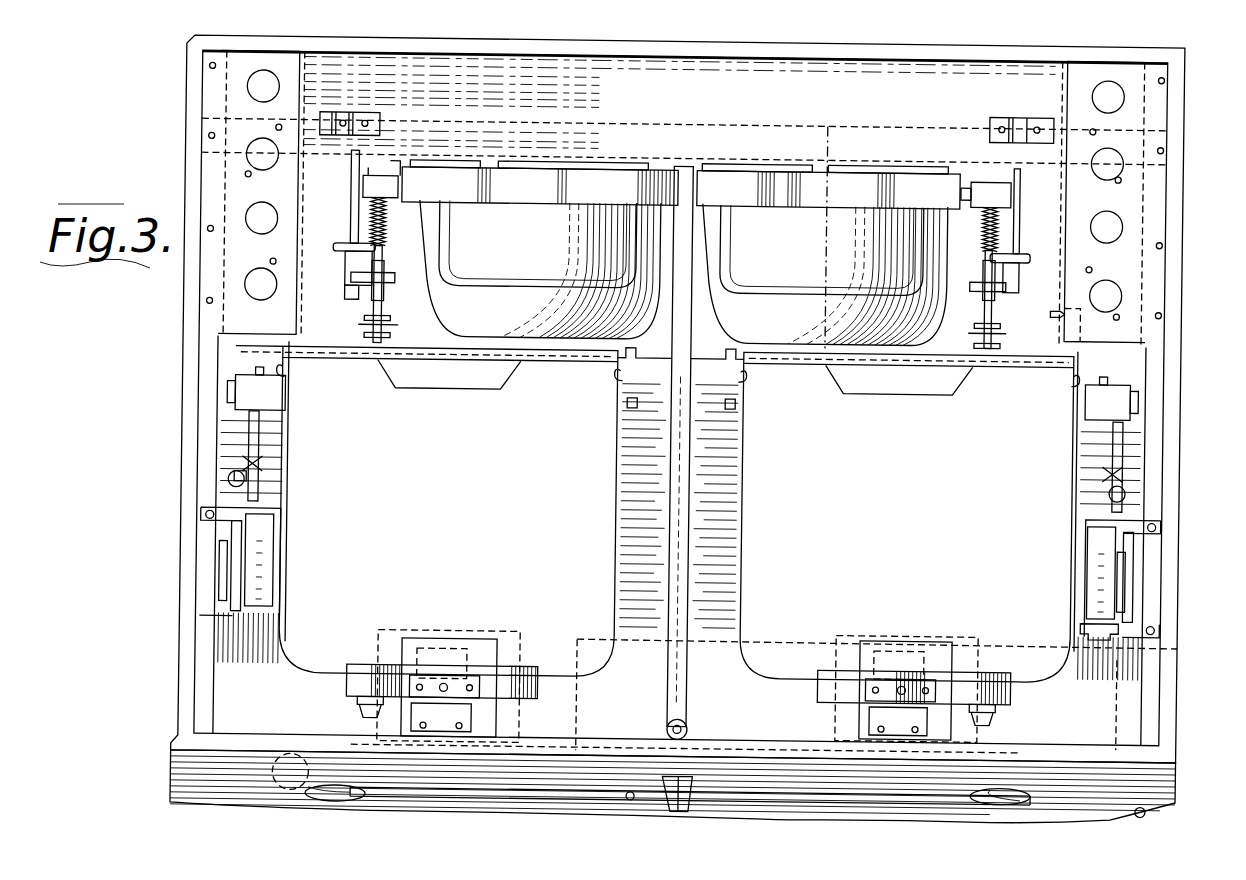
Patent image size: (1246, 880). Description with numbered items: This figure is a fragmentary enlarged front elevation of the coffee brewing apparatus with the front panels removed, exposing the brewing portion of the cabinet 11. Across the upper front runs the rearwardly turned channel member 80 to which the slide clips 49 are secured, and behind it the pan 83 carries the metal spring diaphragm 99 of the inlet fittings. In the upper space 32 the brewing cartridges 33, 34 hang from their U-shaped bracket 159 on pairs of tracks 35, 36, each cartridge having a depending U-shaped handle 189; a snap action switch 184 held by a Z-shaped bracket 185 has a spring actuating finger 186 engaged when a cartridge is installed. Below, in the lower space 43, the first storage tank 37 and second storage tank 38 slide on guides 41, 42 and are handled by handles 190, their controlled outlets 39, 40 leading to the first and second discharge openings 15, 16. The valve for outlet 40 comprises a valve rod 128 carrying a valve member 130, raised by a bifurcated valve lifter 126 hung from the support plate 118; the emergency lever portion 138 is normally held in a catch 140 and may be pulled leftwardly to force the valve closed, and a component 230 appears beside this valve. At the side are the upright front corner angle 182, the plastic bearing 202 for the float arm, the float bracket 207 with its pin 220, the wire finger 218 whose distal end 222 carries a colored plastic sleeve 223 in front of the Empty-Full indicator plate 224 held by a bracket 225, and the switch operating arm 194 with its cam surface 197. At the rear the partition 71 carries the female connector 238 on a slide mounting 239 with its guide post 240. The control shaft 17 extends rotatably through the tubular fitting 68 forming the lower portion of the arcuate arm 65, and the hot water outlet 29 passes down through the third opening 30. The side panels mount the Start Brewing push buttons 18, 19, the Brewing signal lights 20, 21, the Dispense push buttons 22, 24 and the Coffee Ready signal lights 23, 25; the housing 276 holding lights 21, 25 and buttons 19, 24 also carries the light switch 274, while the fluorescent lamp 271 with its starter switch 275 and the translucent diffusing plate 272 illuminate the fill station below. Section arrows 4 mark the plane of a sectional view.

The section line 4 is at (157, 100).
The cabinet 11 is at (845, 132).
The first discharge opening 15 is at (340, 783).
The second discharge opening 16 is at (1035, 778).
The control shaft 17 is at (697, 721).
The first "Start Brewing" push button 18 is at (282, 154).
The second "Start Brewing" push button 19 is at (1112, 140).
The "Brewing" signal light 20 is at (279, 84).
The second "Brewing" signal light 21 is at (1093, 85).
The "Dispense" push button 22 is at (283, 285).
The "Coffee Ready" signal light 23 is at (282, 219).
The second "Dispense" push button 24 is at (1110, 283).
The second "Coffee Ready" signal light 25 is at (1112, 213).
The outlet 29 is at (700, 800).
The third opening 30 is at (705, 773).
The upper space 32 is at (402, 300).
The brewing cartridge 33 is at (640, 314).
The second brewing cartridge 34 is at (726, 292).
The tracks 35 is at (700, 165).
The tracks 36 is at (950, 158).
The first storage tank 37 is at (292, 652).
The second storage tank 38 is at (1050, 674).
The controlled outlet 39 is at (355, 678).
The controlled outlet 40 is at (992, 696).
The guides 41 is at (228, 368).
The guides 42 is at (626, 368).
The lower space 43 is at (706, 521).
The slide clips 49 is at (364, 110).
The arcuate arm 65 is at (696, 680).
The tubular fitting 68 is at (675, 724).
The partition 71 is at (720, 460).
The channel member 80 is at (612, 68).
The pan 83 is at (1036, 160).
The metal spring diaphragm 99 is at (612, 160).
The support plate 118 is at (353, 193).
The bifurcated valve lifter 126 is at (395, 322).
The valve rod 128 is at (1000, 305).
The valve member 130 is at (368, 706).
The lever portion 138 is at (338, 258).
The catch 140 is at (1020, 268).
The U-shaped bracket 159 is at (528, 200).
The front corner angle 182 is at (1158, 437).
The snap action switch 184 is at (988, 232).
The Z-shaped bracket 185 is at (990, 172).
The spring actuating finger 186 is at (983, 205).
The U-shaped handle 189 is at (778, 284).
The handle 190 is at (490, 387).
The operating arm 194 is at (1095, 462).
The cam surface 197 is at (270, 455).
The plastic bearing 202 is at (290, 408).
The bracket 207 is at (238, 428).
The wire finger 218 is at (240, 490).
The pin 220 is at (240, 463).
The distal end 222 is at (1121, 630).
The plastic sleeve 223 is at (285, 600).
The indicator plate 224 is at (266, 548).
The bracket 225 is at (1148, 515).
The right roller unit 230 is at (546, 690).
The female connector 238 is at (872, 697).
The slide mounting 239 is at (492, 720).
The guide post 240 is at (882, 710).
The fluorescent lamp 271 is at (475, 796).
The light diffusing translucent plate 272 is at (595, 790).
The light switch 274 is at (1078, 316).
The starter switch 275 is at (290, 756).
The housing 276 is at (290, 318).